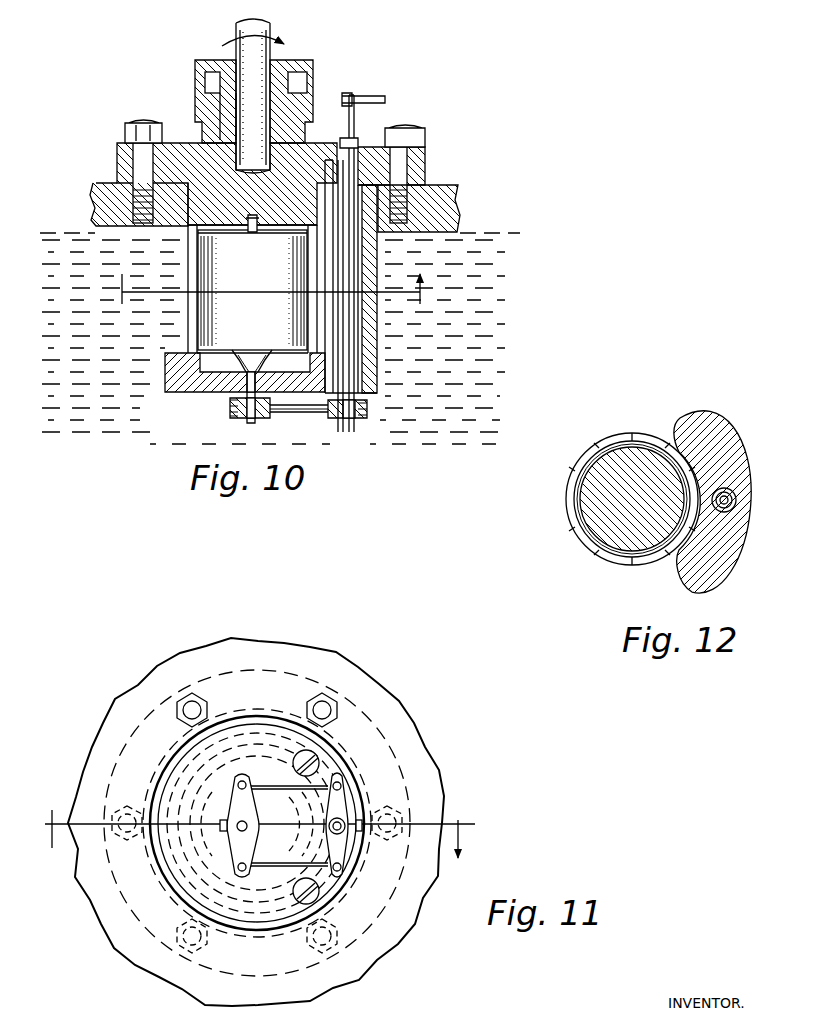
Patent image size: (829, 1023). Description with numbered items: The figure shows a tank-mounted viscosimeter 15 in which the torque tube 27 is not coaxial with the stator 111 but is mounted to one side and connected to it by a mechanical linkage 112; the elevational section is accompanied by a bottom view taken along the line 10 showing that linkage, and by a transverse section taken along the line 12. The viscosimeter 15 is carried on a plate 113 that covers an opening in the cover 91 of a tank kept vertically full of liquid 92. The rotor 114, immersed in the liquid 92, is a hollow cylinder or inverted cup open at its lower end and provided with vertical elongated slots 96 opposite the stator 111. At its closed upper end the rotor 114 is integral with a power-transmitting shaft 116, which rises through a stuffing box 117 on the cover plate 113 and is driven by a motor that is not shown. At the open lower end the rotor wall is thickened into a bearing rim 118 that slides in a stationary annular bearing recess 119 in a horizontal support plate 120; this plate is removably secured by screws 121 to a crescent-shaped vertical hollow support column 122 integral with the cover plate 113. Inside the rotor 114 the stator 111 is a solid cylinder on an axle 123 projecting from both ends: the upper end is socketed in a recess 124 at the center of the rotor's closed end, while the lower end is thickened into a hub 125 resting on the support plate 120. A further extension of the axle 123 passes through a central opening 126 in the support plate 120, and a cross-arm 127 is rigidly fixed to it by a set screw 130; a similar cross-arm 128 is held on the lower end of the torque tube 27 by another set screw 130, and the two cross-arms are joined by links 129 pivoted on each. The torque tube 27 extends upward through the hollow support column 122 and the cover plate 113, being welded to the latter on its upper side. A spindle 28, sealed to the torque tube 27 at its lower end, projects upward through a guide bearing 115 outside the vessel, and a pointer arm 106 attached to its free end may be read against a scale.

In FIG. 11, the section line 10- 10 is at (255, 836).
In FIG. 10, the section line 12— 12 is at (271, 285).
In FIG. 10, the viscosimeter 15 is at (386, 330).
In FIG. 10, the torque tube 27 is at (356, 225).
In FIG. 12, the torque tube 27 is at (736, 497).
In FIG. 11, the torque tube 27 is at (343, 820).
In FIG. 10, the spindle 28 is at (345, 258).
In FIG. 12, the spindle 28 is at (736, 506).
In FIG. 11, the spindle 28 is at (360, 827).
In FIG. 10, the cover 91 is at (100, 197).
In FIG. 11, the cover 91 is at (135, 702).
In FIG. 10, the liquid 92 is at (466, 389).
In FIG. 10, the vertical elongated slots 96 is at (190, 295).
In FIG. 12, the vertical elongated slots 96 is at (631, 562).
In FIG. 10, the pointer arm 106 is at (368, 100).
In FIG. 10, the stator 111 is at (223, 308).
In FIG. 12, the stator 111 is at (622, 520).
In FIG. 11, the stator 111 is at (165, 788).
In FIG. 10, the mechanical linkage 112 is at (303, 422).
In FIG. 10, the plate 113 is at (181, 152).
In FIG. 11, the plate 113 is at (235, 697).
In FIG. 10, the rotor 114 is at (192, 218).
In FIG. 12, the rotor 114 is at (580, 480).
In FIG. 11, the rotor 114 is at (274, 748).
In FIG. 10, the guide bearing 115 is at (352, 140).
In FIG. 10, the power-transmitting shaft 116 is at (256, 66).
In FIG. 10, the stuffing box 117 is at (322, 75).
In FIG. 10, the bearing rim 118 is at (186, 357).
In FIG. 10, the annular bearing recess 119 is at (180, 362).
In FIG. 10, the support plate 120 is at (180, 388).
In FIG. 11, the support plate 120 is at (258, 767).
In FIG. 11, the screws 121 is at (312, 757).
In FIG. 10, the support column 122 is at (372, 338).
In FIG. 12, the support column 122 is at (724, 560).
In FIG. 11, the support column 122 is at (360, 732).
In FIG. 10, the axle 123 is at (254, 232).
In FIG. 11, the axle 123 is at (238, 829).
In FIG. 10, the recess 124 is at (192, 228).
In FIG. 10, the hub 125 is at (250, 365).
In FIG. 10, the central opening 126 is at (232, 420).
In FIG. 10, the cross-arm 127 is at (258, 420).
In FIG. 11, the cross-arm 127 is at (240, 869).
In FIG. 10, the cross-arm 128 is at (337, 422).
In FIG. 11, the cross-arm 128 is at (340, 871).
In FIG. 10, the links 129 is at (322, 418).
In FIG. 11, the links 129 is at (345, 785).
In FIG. 10, the set screw 130 is at (232, 416).
In FIG. 11, the set screw 130 is at (222, 827).